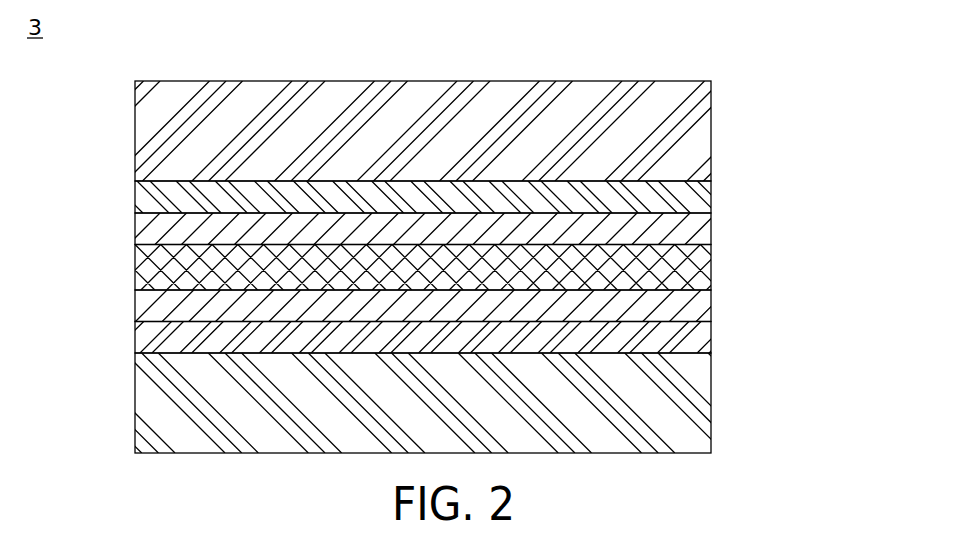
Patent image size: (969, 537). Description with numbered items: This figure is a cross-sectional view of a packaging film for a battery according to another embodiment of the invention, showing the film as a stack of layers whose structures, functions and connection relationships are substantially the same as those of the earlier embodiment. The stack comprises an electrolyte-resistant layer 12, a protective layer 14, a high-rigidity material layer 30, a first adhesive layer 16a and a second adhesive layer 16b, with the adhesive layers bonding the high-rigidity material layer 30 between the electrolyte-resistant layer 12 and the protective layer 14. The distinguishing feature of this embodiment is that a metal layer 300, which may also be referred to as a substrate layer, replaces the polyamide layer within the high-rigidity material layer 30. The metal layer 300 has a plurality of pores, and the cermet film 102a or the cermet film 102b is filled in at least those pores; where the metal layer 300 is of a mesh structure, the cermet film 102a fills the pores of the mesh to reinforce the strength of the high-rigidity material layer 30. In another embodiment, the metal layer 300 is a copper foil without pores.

The electrolyte-resistant layer 12 is at (711, 405).
The protective layer 14 is at (711, 131).
The first adhesive layer 16a is at (711, 335).
The second adhesive layer 16b is at (711, 198).
The high-rigidity material layer 30 is at (455, 271).
The cermet film 102a is at (711, 305).
The cermet film 102b is at (711, 228).
The metal layer 300 is at (711, 266).